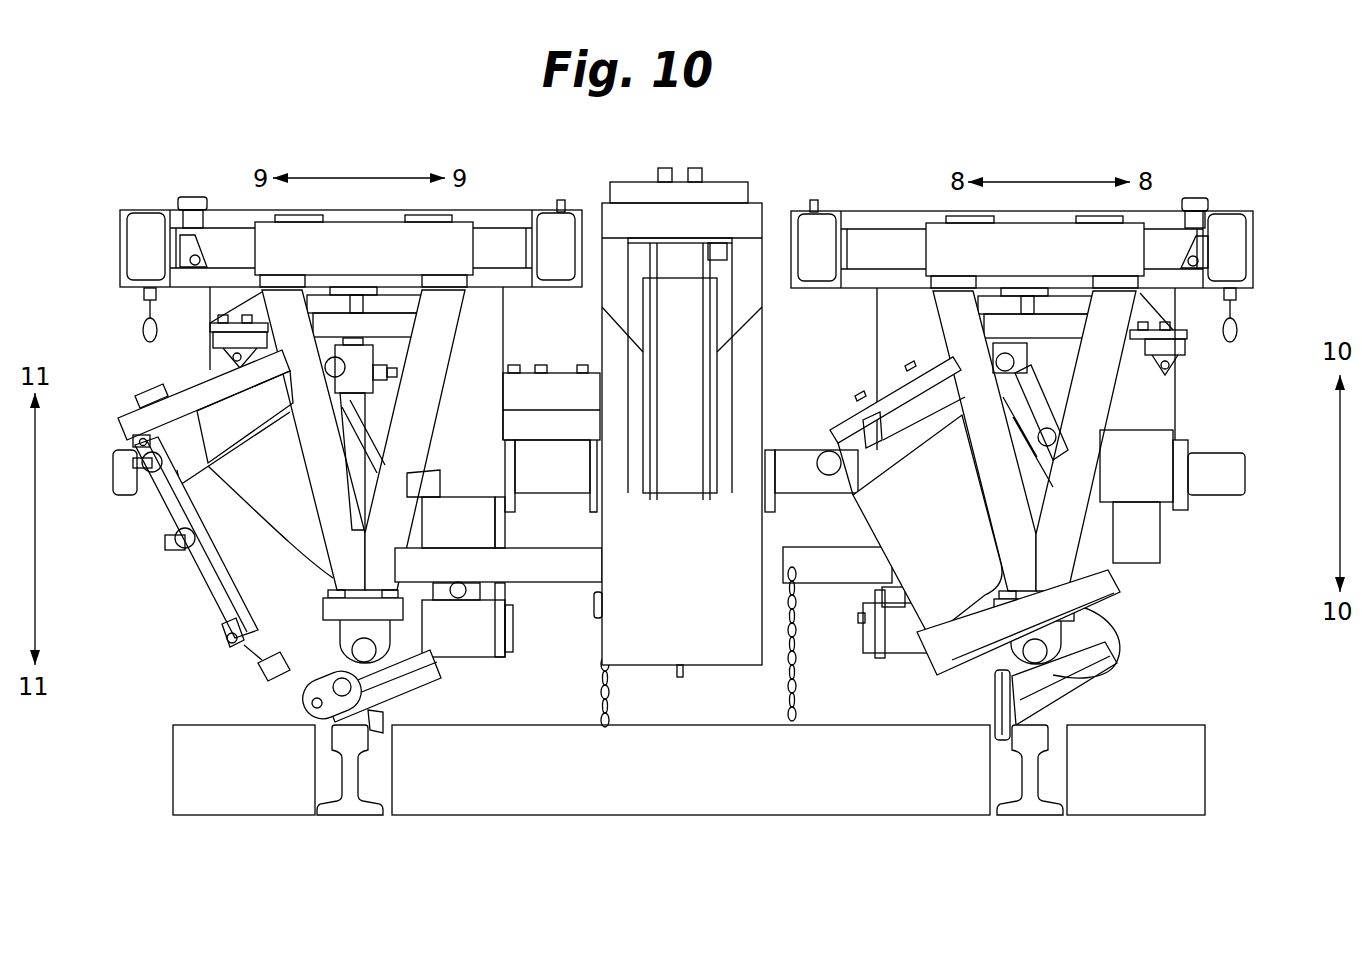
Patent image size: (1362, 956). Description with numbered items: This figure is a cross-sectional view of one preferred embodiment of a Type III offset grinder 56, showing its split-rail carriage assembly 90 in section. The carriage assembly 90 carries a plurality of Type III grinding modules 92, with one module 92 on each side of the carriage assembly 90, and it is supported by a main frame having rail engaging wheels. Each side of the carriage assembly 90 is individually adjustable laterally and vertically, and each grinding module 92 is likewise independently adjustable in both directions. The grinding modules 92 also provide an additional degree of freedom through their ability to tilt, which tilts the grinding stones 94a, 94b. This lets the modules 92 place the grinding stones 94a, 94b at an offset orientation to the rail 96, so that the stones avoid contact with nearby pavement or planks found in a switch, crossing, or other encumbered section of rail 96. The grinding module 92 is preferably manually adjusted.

The Type III offset grinder 56 is at (881, 128).
The split-rail carriage assembly 90 is at (728, 177).
The Type III grinding module 92 is at (240, 558).
The grinding stone 94a is at (412, 675).
The grinding stone 94b is at (1057, 687).
The rail 96 is at (348, 810).